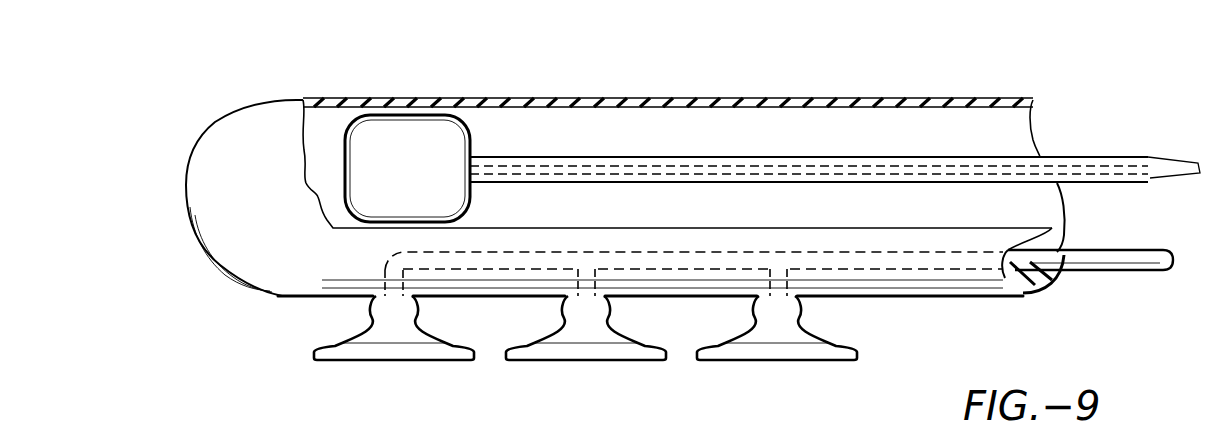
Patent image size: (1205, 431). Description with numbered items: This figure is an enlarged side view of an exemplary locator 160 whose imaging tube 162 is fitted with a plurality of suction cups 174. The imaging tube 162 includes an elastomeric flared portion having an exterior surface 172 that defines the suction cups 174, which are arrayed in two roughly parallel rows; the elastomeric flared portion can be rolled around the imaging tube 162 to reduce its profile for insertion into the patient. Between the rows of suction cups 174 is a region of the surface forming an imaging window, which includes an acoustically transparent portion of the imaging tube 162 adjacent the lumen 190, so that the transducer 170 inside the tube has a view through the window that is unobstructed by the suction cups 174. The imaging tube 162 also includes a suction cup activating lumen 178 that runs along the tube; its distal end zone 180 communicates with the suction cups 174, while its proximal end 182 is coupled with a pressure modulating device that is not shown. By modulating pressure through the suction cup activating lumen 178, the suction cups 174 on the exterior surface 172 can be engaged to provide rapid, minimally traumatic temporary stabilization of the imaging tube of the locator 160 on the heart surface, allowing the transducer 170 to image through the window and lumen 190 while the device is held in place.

The locator 160 is at (968, 100).
The imaging tube 162 is at (322, 100).
The transducer 170 is at (403, 165).
The exterior surface 172 is at (277, 297).
The suction cups 174 is at (313, 348).
The suction cup activating lumen 178 is at (924, 270).
The distal end zone 180 is at (390, 292).
The proximal end 182 is at (1160, 272).
The lumen 190 is at (668, 100).